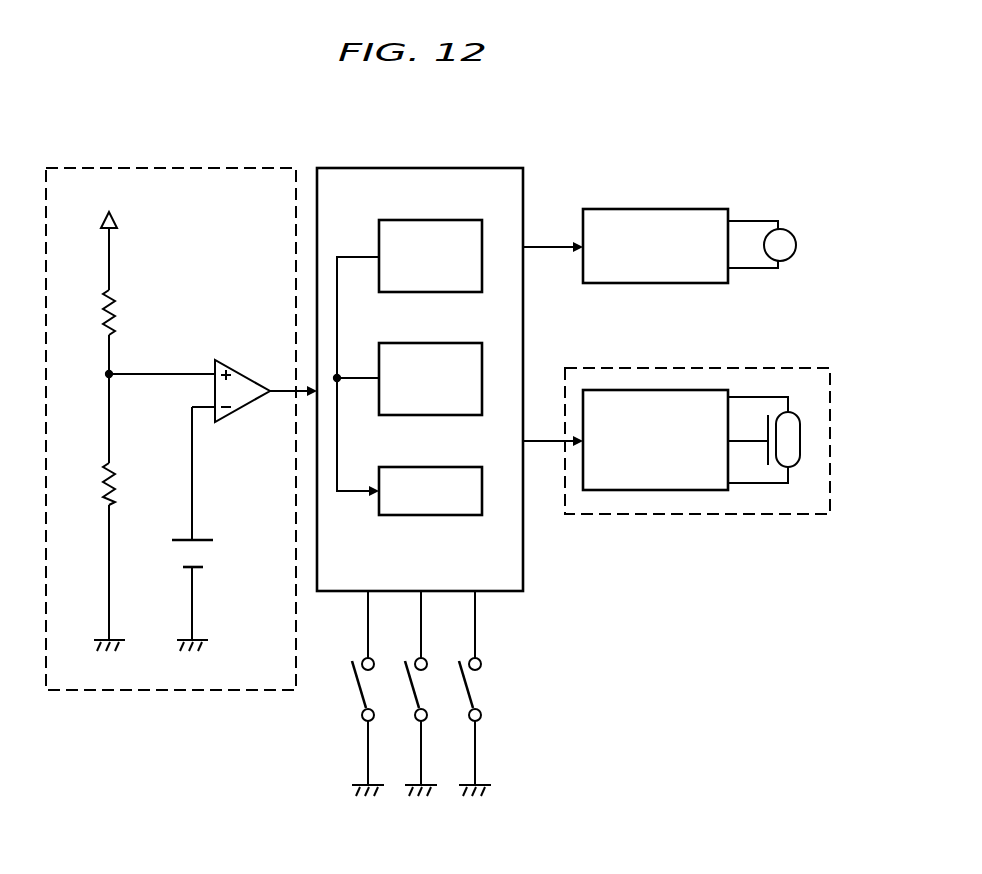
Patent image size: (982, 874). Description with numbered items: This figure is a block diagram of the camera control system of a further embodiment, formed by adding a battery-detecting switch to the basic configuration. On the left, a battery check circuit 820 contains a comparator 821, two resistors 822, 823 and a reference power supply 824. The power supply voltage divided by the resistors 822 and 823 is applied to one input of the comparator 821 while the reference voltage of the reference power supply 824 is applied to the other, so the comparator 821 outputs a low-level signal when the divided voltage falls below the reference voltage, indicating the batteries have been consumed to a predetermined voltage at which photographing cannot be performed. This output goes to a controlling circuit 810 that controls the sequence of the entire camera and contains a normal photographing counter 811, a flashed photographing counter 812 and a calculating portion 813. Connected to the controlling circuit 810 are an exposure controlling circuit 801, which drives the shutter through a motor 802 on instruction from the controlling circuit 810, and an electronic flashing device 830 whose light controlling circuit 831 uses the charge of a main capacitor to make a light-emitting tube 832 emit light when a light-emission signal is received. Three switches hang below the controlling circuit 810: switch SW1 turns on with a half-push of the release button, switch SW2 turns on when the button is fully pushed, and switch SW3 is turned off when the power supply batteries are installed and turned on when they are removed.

The battery check circuit 820 is at (163, 168).
The comparator 821 is at (237, 364).
The resistor 822 is at (116, 313).
The resistor 823 is at (117, 485).
The reference power supply 824 is at (212, 553).
The controlling circuit 810 is at (413, 168).
The normal photographing counter 811 is at (461, 220).
The flashed photographing counter 812 is at (468, 343).
The calculating portion 813 is at (464, 467).
The exposure controlling circuit 801 is at (690, 209).
The motor 802 is at (796, 238).
The electronic flashing device 830 is at (783, 368).
The light controlling circuit 831 is at (692, 390).
The light-emitting tube 832 is at (803, 431).
The switch SW1 is at (352, 697).
The switch SW2 is at (410, 694).
The switch SW3 is at (478, 697).